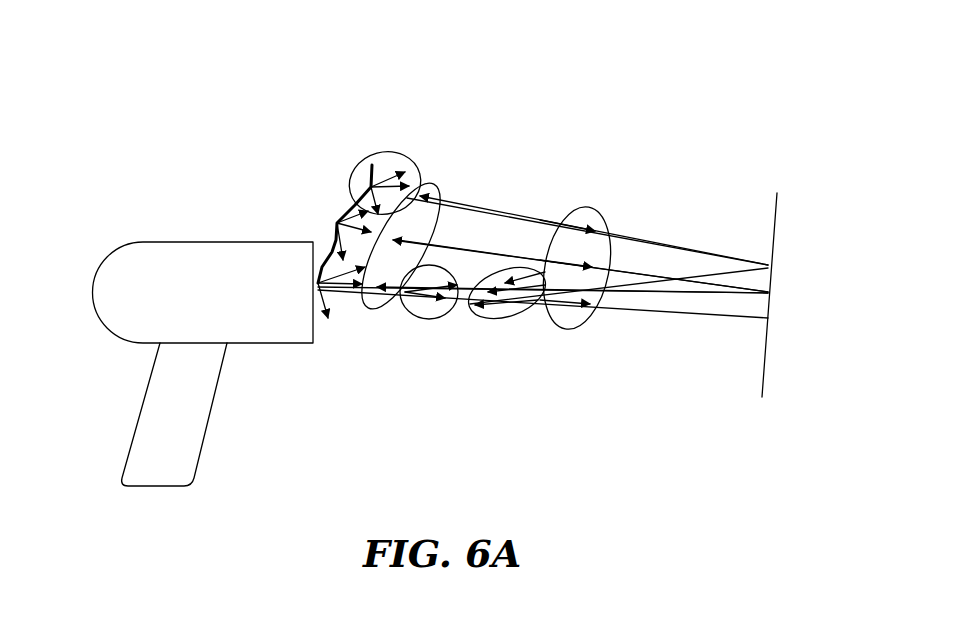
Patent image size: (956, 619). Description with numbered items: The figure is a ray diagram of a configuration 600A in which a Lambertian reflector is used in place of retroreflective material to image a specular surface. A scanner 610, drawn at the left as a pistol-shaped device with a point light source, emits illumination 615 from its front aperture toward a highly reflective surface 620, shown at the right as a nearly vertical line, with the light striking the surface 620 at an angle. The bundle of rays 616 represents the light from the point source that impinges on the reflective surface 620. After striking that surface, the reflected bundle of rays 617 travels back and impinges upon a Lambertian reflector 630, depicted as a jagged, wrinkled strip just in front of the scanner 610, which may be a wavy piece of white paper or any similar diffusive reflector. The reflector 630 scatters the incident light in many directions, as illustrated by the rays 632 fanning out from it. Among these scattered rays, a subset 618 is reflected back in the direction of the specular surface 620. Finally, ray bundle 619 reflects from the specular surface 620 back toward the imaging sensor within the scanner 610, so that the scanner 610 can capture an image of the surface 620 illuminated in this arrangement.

The configuration 600A is at (165, 74).
The scanner 610 is at (183, 242).
The illumination 615 is at (315, 282).
The bundle of rays 616 is at (422, 320).
The reflected bundle of rays 617 is at (428, 187).
The subset of rays 618 is at (585, 207).
The ray bundle 619 is at (508, 315).
The highly reflective surface 620 is at (777, 193).
The Lambertian reflector 630 is at (337, 217).
The scattered rays 632 is at (390, 152).